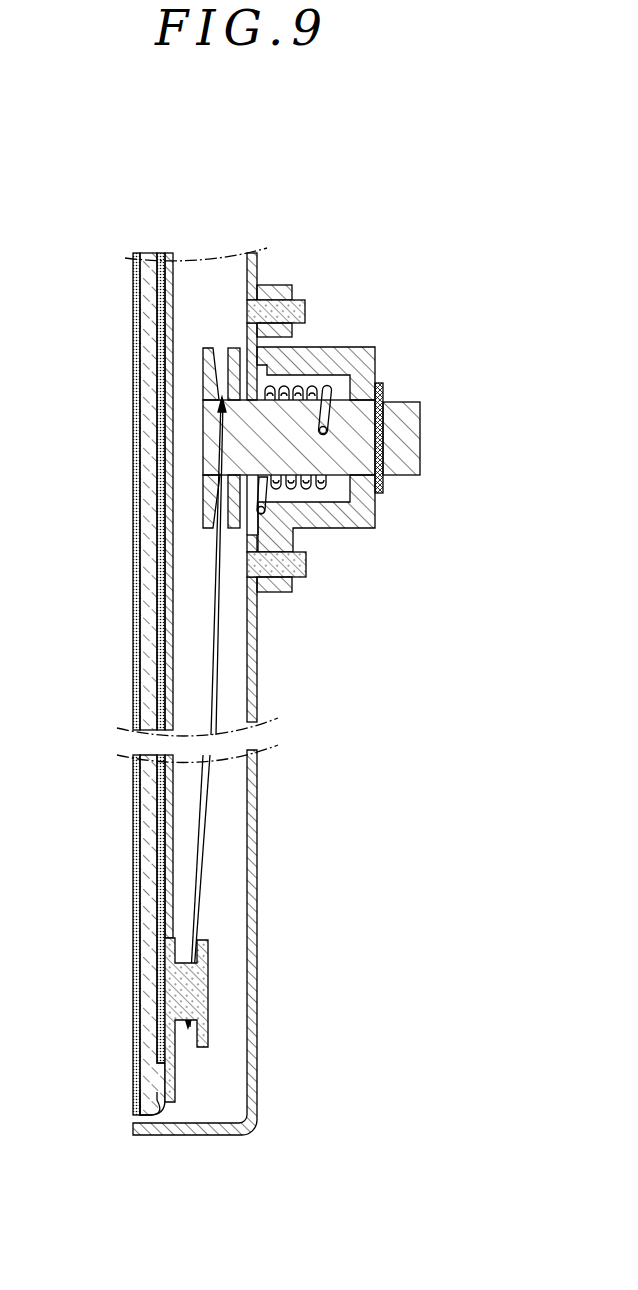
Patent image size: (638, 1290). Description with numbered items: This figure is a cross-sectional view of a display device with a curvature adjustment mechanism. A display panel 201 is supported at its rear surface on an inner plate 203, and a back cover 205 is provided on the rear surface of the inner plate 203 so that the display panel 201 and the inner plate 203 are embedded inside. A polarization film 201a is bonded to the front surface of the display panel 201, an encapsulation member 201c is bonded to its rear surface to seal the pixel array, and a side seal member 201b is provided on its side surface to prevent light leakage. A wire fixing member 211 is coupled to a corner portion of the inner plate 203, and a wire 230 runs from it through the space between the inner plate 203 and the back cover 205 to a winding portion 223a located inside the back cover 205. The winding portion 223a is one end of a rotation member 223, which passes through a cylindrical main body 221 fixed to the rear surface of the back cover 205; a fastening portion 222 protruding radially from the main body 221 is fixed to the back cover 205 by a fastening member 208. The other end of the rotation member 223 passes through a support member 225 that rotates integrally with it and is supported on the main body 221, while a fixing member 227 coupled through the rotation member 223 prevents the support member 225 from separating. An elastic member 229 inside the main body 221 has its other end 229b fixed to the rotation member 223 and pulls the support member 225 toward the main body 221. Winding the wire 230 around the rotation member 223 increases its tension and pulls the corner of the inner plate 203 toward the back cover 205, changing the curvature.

The display panel 201 is at (148, 863).
The polarization film 201a is at (133, 898).
The side seal member 201b is at (140, 1110).
The encapsulation member 201c is at (158, 837).
The inner plate 203 is at (167, 820).
The back cover 205 is at (258, 648).
The fastening member 208 is at (307, 565).
The wire fixing member 211 is at (200, 1000).
The main body 221 is at (336, 518).
The fastening portion 222 is at (275, 302).
The rotation member 223 is at (410, 430).
The winding portion 223a is at (219, 325).
The support member 225 is at (376, 362).
The fixing member 227 is at (385, 492).
The elastic member 229 is at (313, 388).
The other end of elastic member 229b is at (331, 386).
The wire 230 is at (213, 677).